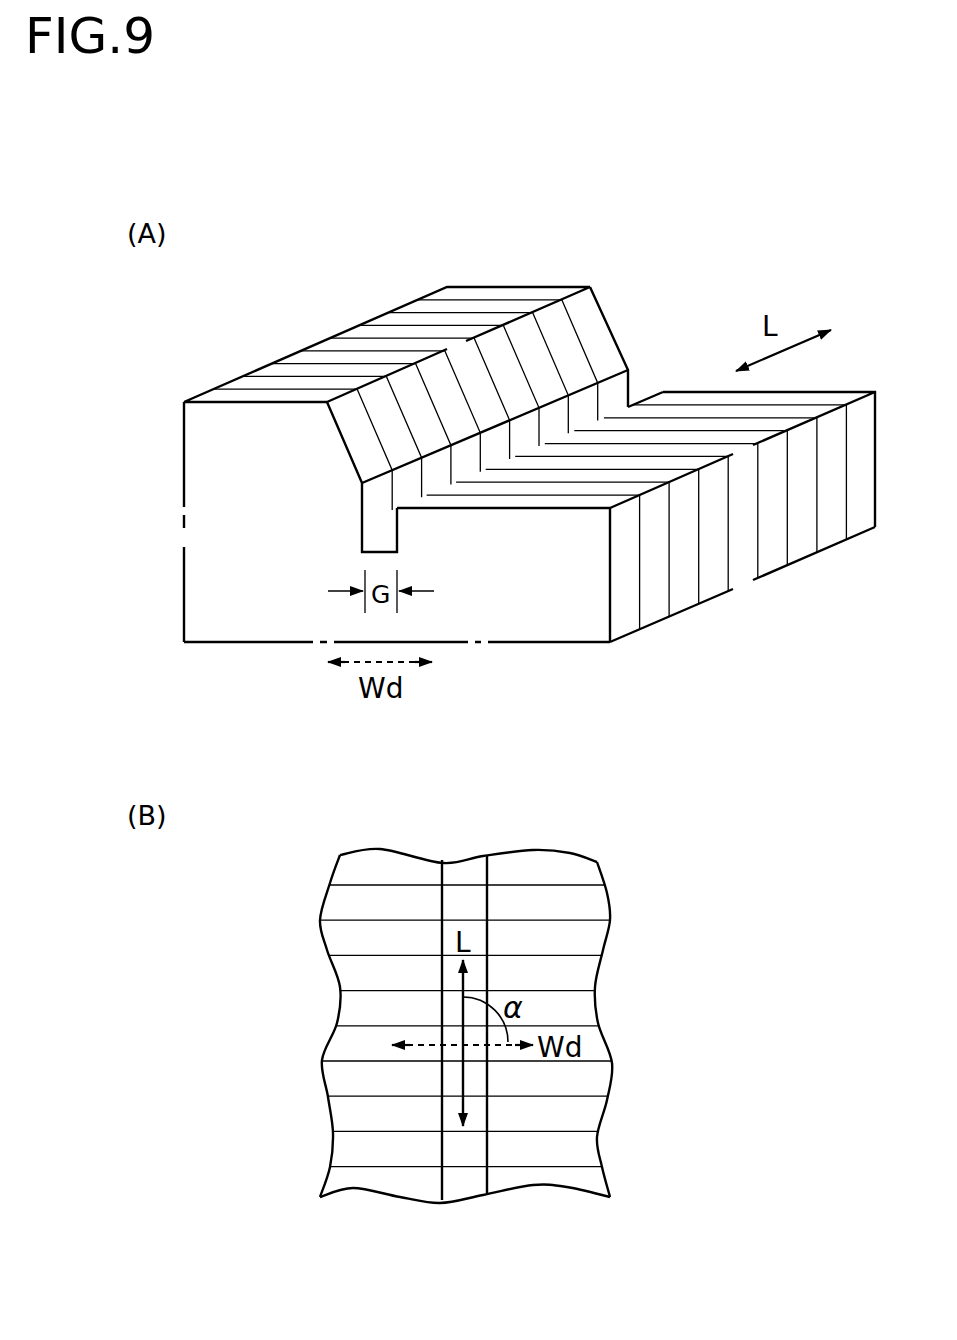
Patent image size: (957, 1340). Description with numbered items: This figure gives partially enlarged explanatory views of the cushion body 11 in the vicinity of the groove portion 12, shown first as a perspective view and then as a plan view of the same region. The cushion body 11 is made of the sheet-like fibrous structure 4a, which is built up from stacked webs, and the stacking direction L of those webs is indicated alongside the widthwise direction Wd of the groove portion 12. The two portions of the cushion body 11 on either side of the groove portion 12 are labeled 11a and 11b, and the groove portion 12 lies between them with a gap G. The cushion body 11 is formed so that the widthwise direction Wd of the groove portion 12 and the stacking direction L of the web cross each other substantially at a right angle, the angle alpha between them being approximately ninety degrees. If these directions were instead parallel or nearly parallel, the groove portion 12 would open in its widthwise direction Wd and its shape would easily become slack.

The cushion body 11 is at (284, 266).
The first guide portion 11a is at (667, 463).
The second guide portion 11b is at (225, 418).
The groove portion 12 is at (388, 552).
The sheet-like fibrous structure 4a is at (567, 617).